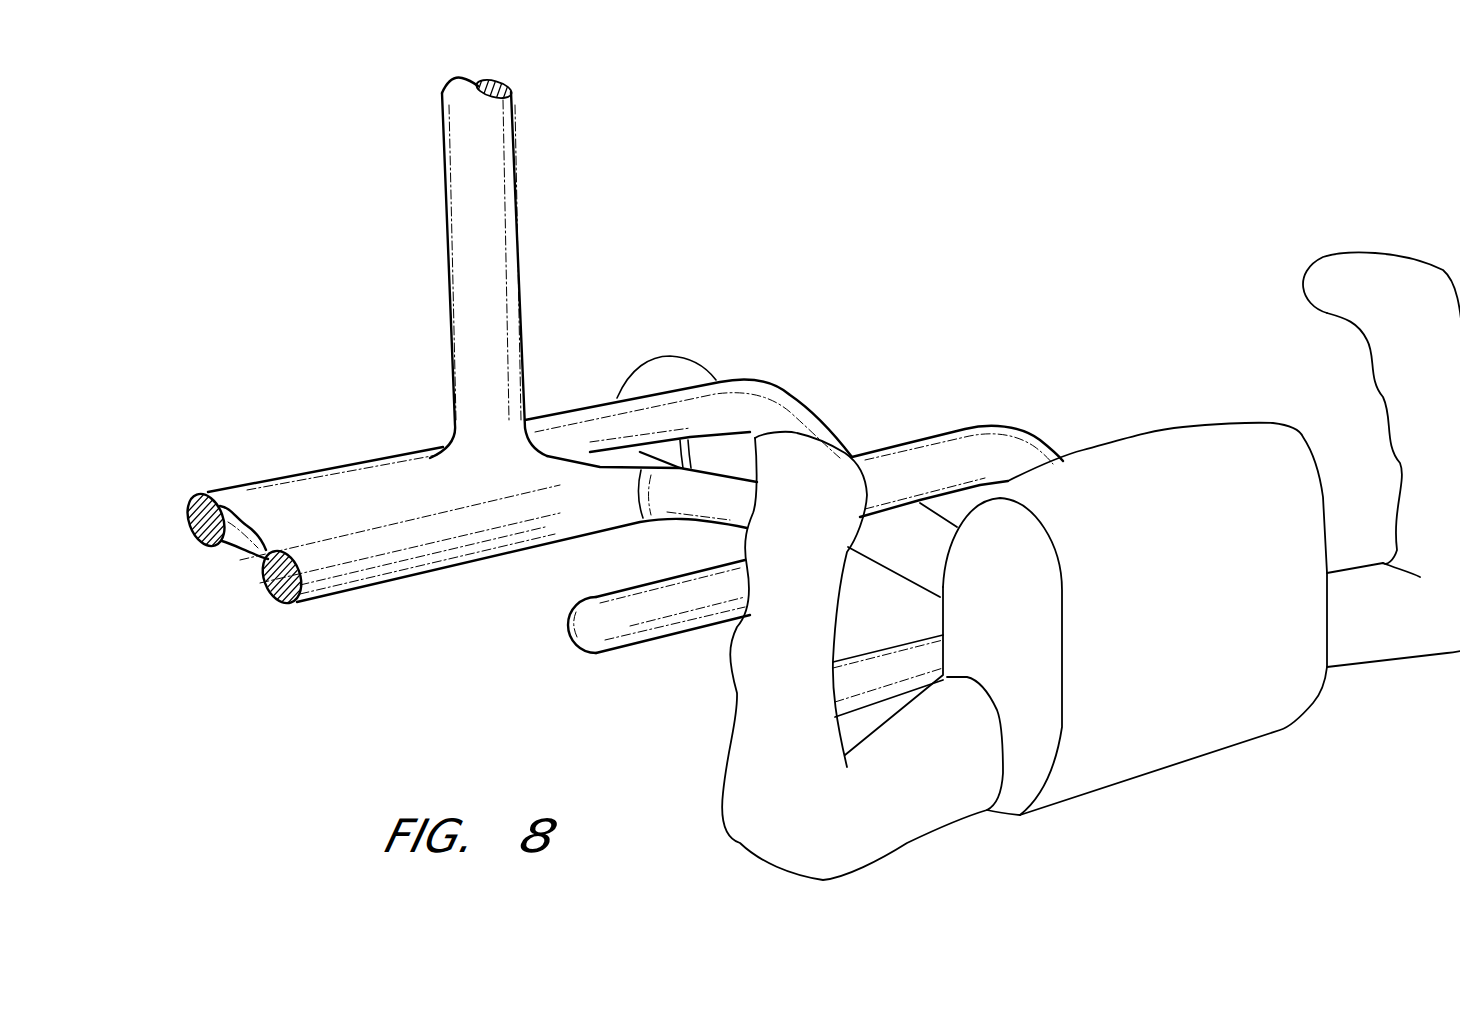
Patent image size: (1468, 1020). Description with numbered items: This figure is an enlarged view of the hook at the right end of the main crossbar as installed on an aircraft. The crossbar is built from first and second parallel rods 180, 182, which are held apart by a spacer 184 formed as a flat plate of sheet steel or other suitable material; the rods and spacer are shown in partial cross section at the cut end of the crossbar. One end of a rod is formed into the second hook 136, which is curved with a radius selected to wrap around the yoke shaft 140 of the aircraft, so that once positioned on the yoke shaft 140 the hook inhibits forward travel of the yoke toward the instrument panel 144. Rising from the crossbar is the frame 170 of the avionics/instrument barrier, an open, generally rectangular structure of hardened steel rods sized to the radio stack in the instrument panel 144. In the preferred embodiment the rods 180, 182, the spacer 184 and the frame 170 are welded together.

The frame 170 is at (478, 308).
The second hook 136 is at (773, 403).
The instrument panel 144 is at (1180, 490).
The yoke shaft 140 is at (880, 548).
The first rod 180 is at (282, 598).
The second rod 182 is at (190, 528).
The spacer 184 is at (246, 548).